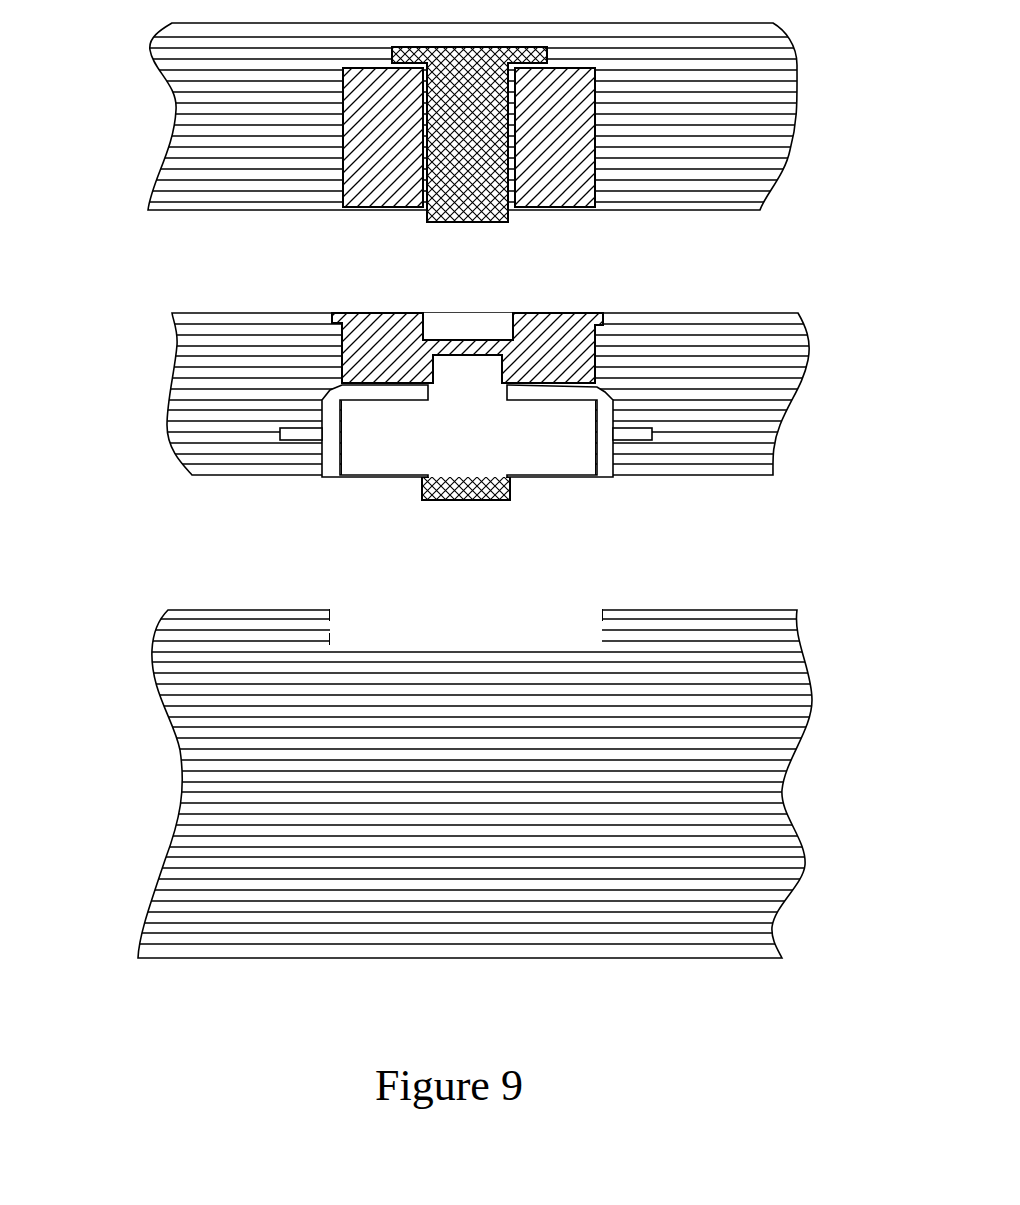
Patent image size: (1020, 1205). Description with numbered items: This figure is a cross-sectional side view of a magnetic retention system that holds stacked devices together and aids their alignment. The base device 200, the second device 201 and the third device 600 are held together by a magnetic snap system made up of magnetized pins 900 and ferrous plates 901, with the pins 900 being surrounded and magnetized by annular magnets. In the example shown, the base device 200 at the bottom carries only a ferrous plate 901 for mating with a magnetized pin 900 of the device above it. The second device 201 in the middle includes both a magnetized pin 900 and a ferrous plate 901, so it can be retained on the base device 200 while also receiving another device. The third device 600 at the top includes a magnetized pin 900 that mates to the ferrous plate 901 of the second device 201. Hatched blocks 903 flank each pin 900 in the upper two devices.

The third device 600 is at (135, 145).
The second device 201 is at (132, 410).
The base device 200 is at (134, 755).
The magnetized pin 900 is at (487, 222).
The ferrous plate 901 is at (383, 313).
The dielectric spacer 903 is at (580, 207).